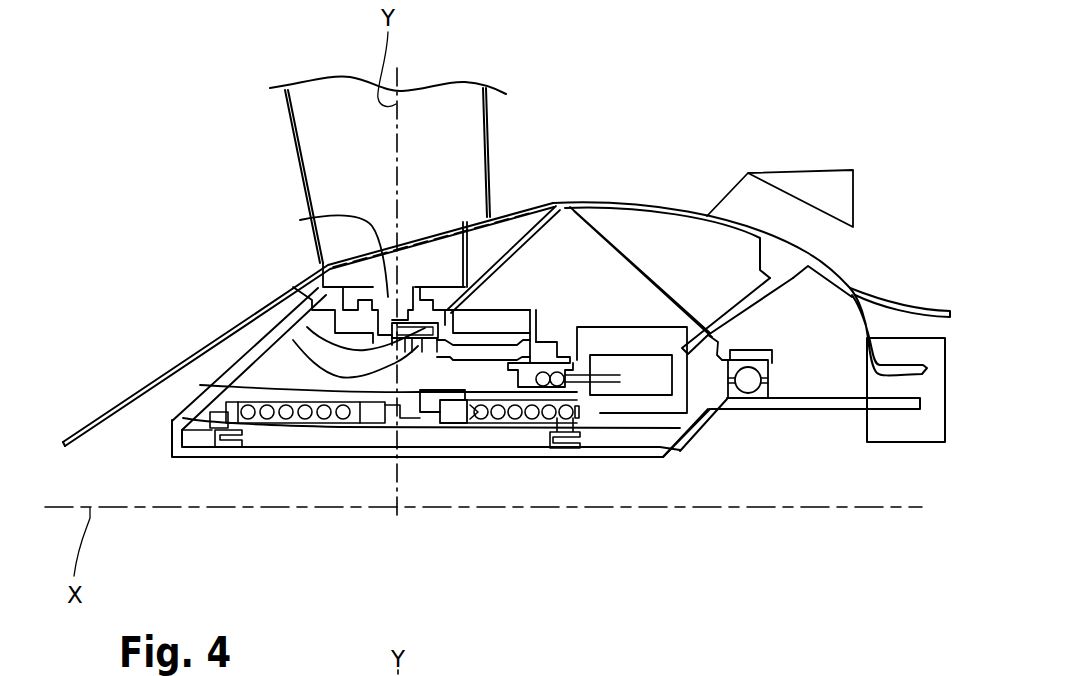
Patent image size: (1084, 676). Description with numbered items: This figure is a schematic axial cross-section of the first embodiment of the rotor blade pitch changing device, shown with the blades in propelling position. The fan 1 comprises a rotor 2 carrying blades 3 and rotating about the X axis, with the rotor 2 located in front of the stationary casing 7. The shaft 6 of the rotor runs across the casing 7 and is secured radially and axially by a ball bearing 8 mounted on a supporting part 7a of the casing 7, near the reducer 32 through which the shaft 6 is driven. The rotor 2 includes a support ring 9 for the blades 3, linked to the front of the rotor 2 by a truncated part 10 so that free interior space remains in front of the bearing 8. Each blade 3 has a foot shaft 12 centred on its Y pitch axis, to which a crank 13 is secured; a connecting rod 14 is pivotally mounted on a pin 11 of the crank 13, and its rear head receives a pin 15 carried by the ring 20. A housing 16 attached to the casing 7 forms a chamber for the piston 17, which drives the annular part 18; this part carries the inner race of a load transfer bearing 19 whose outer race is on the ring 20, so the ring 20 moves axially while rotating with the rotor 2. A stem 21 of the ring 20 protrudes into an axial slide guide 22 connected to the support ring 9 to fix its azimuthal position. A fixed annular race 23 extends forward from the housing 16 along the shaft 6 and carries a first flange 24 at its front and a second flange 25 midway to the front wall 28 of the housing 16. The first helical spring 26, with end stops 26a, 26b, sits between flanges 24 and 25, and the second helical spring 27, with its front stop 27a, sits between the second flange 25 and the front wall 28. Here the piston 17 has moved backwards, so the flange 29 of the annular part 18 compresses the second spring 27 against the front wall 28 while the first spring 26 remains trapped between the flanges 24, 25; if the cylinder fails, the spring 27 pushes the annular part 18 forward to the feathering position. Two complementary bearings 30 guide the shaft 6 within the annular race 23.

The fan 1 is at (175, 192).
The rotor 2 is at (108, 308).
The blade 3 is at (325, 150).
The shaft 6 is at (288, 458).
The stationary casing 7 is at (851, 253).
The supporting part 7a is at (717, 313).
The bearing 8 is at (768, 372).
The support ring 9 is at (322, 315).
The truncated part 10 is at (250, 367).
The pin 11 is at (293, 340).
The shaft 12 is at (300, 220).
The crank 13 is at (307, 327).
The connecting rod 14 is at (486, 353).
The pin 15 is at (553, 348).
The housing 16 is at (688, 386).
The piston 17 is at (650, 400).
The annular part 18 is at (465, 395).
The load transfer bearing 19 is at (668, 345).
The ring 20 is at (572, 330).
The stem 21 is at (537, 324).
The axial slide guide 22 is at (510, 320).
The fixed annular race 23 is at (448, 433).
The first flange 24 is at (183, 418).
The second flange 25 is at (392, 418).
The first helical spring 26 is at (257, 420).
The front end stop 26a is at (230, 418).
The rear end stop 26b is at (368, 420).
The second helical spring 27 is at (517, 420).
The front end stop 27a is at (492, 420).
The front wall 28 is at (582, 407).
The flange 29 is at (200, 385).
The complementary bearing 30 is at (213, 413).
The reducer 32 is at (897, 420).